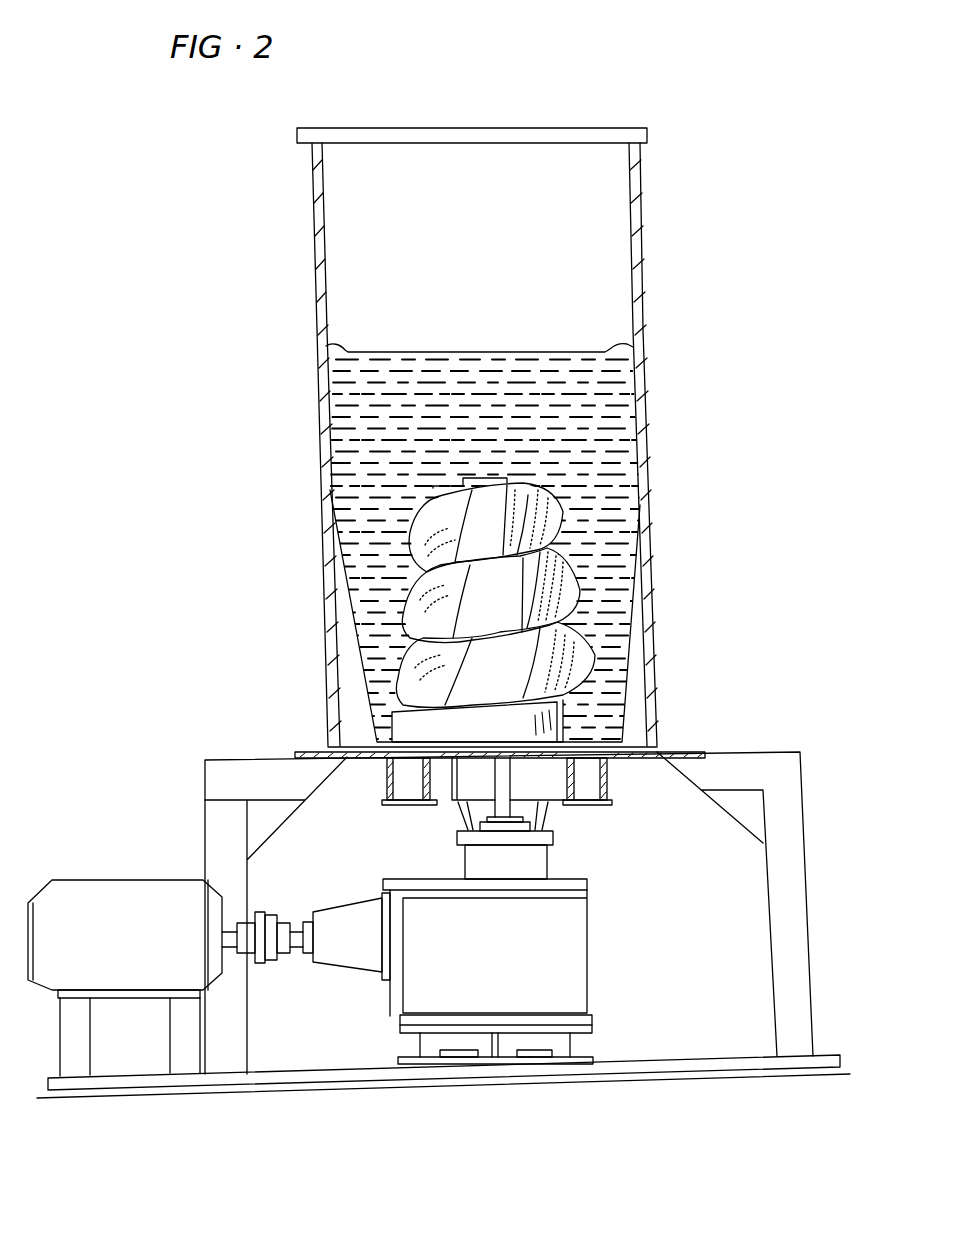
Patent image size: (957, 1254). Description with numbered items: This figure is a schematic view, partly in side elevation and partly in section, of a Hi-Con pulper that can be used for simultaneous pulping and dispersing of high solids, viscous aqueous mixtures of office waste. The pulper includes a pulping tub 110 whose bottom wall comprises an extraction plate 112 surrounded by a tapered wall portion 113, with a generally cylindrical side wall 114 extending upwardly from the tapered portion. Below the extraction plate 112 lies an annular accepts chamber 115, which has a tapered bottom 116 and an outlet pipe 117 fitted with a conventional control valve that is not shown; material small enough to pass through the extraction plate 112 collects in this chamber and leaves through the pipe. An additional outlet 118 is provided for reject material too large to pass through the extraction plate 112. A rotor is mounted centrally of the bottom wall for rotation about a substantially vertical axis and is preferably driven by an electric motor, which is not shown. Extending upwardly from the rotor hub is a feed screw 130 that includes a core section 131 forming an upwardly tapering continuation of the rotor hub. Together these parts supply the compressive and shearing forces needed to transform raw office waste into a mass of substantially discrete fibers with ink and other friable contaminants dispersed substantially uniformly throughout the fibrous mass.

The pulping tub 110 is at (300, 247).
The extraction plate 112 is at (455, 762).
The tapered wall portion 113 is at (630, 670).
The cylindrical side wall 114 is at (644, 260).
The annular accepts chamber 115 is at (470, 788).
The tapered bottom 116 is at (545, 788).
The outlet pipe 117 is at (608, 783).
The additional outlet 118 is at (407, 782).
The feed screw 130 is at (578, 493).
The core section 131 is at (490, 497).